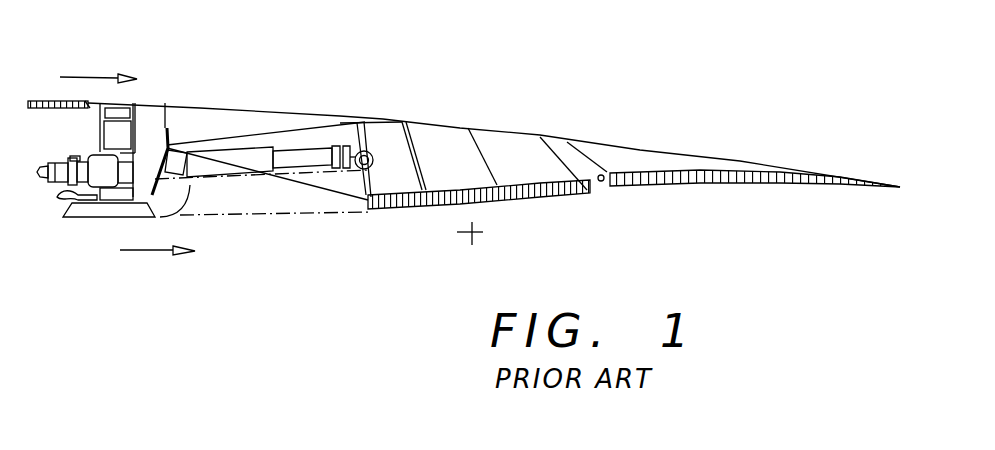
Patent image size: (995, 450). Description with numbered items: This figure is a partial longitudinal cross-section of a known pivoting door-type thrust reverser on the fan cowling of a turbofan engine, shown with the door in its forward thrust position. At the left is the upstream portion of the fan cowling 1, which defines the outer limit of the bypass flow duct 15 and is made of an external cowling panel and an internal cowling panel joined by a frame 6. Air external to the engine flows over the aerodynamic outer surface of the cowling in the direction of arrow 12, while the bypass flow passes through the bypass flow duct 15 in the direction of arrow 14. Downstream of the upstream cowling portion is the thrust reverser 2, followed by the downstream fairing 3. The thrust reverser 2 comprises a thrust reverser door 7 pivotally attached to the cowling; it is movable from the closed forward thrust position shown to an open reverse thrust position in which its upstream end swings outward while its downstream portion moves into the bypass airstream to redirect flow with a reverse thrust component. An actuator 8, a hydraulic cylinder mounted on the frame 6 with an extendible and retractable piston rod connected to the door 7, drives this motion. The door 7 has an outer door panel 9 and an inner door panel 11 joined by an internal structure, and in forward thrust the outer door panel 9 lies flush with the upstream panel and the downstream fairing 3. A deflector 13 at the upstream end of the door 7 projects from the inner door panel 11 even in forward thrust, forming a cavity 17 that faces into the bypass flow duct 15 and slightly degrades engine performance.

The upstream portion of the fan cowling 1 is at (54, 101).
The thrust reverser 2 is at (400, 112).
The downstream fairing 3 is at (588, 163).
The frame 6 is at (70, 205).
The thrust reverser door 7 is at (285, 123).
The actuator 8 is at (238, 158).
The outer door panel 9 is at (318, 117).
The inner door panel 11 is at (303, 203).
The arrow indicating external airflow 12 is at (102, 77).
The deflector 13 is at (145, 190).
The arrow indicating bypass flow direction 14 is at (156, 252).
The bypass flow duct 15 is at (634, 207).
The cavity 17 is at (232, 200).